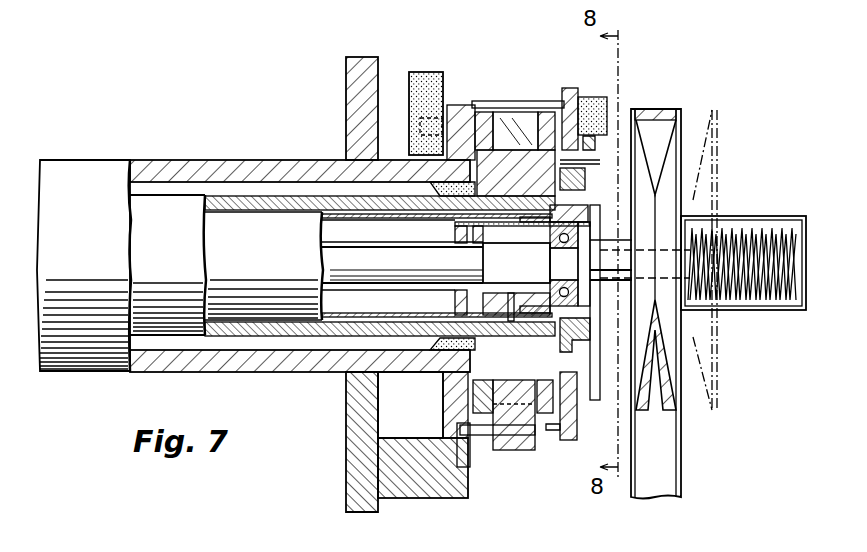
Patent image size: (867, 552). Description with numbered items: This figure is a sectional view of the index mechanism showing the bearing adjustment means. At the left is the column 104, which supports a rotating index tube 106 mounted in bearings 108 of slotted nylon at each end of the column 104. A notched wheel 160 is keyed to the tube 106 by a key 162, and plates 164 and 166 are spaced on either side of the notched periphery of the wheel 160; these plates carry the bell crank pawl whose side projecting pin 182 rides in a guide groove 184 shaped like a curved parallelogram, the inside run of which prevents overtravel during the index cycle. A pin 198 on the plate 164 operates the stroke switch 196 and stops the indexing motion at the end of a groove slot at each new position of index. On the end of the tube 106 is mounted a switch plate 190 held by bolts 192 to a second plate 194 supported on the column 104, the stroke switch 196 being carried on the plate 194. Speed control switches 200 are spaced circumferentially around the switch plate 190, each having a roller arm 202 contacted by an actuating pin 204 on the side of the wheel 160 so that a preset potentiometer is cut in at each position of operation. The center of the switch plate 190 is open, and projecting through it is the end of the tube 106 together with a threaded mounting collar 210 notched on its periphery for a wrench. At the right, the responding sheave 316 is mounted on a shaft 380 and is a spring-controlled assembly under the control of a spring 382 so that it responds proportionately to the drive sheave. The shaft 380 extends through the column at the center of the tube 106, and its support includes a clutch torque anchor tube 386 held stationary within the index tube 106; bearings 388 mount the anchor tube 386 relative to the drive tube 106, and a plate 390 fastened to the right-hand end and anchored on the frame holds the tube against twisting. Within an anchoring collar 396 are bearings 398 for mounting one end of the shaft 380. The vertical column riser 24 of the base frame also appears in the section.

The vertical column riser 24 is at (356, 116).
The column 104 is at (103, 172).
The rotating tube 106 is at (240, 185).
The bearings 108 is at (423, 405).
The notched wheel 160 is at (512, 122).
The key 162 is at (532, 186).
The plate 164 is at (482, 112).
The plate 166 is at (547, 112).
The side projecting pin 182 is at (482, 436).
The guide groove 184 is at (458, 440).
The switch plate 190 is at (568, 442).
The bolts 192 is at (527, 99).
The second plate 194 is at (468, 498).
The stroke switch 196 is at (424, 74).
The pin 198 is at (420, 122).
The speed control switch 200 is at (612, 104).
The roller arm 202 is at (592, 148).
The actuating pin 204 is at (590, 164).
The threaded mounting collar 210 is at (586, 184).
The responding sheave 316 is at (690, 148).
The shaft 380 is at (377, 268).
The spring 382 is at (738, 310).
The clutch torque anchor tube 386 is at (252, 306).
The bearings 388 is at (580, 342).
The plate 390 is at (600, 372).
The anchoring collar 396 is at (542, 236).
The bearings 398 is at (576, 265).